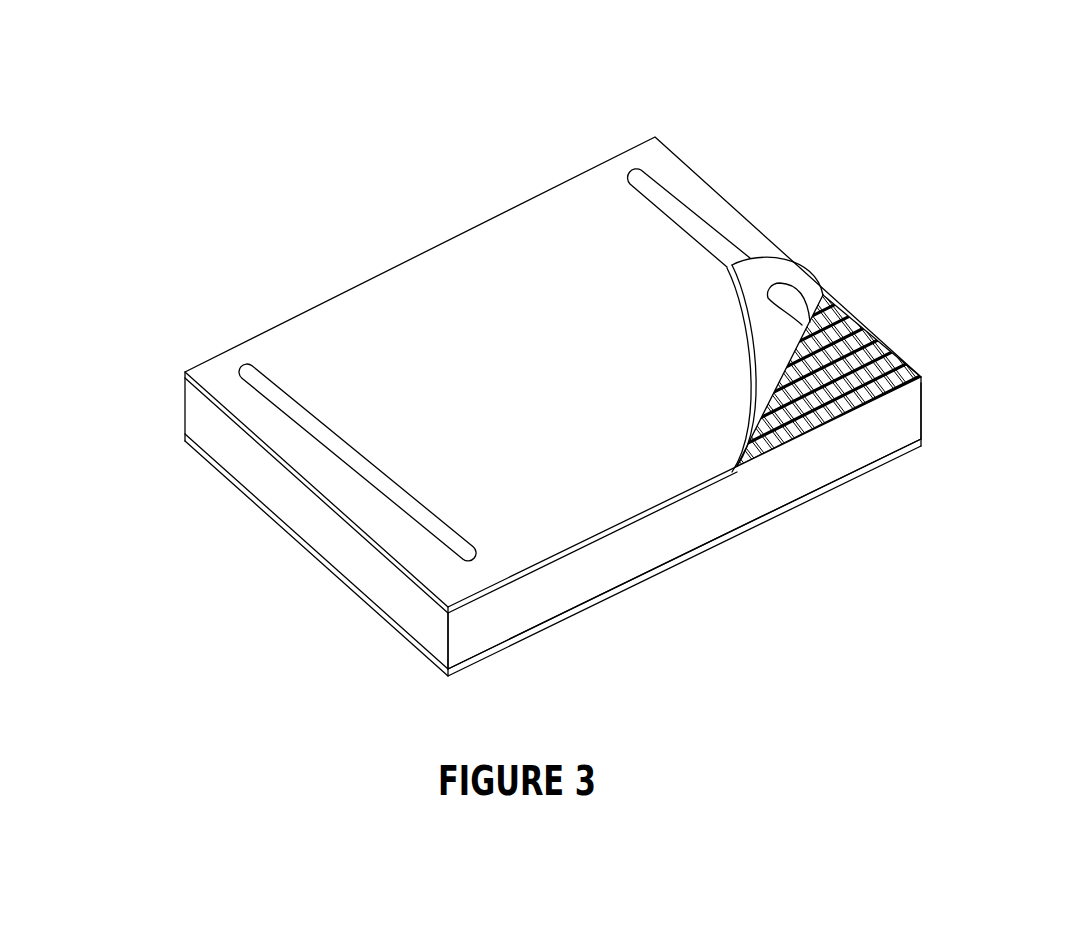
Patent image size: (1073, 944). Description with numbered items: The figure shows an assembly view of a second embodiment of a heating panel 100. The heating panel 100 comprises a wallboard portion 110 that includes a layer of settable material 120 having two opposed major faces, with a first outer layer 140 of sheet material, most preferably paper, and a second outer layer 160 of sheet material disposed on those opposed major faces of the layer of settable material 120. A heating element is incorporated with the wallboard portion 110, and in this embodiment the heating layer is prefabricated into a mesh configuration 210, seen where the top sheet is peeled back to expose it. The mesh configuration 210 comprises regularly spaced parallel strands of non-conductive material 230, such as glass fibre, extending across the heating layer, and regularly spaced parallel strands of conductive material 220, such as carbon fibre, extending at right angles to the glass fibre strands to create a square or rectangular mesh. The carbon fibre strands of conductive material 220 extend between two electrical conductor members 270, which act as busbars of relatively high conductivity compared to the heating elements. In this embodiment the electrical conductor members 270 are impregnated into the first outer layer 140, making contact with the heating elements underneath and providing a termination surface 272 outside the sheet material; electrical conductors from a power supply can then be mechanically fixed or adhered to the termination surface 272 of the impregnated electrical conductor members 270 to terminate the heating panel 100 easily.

The heating panel 100 is at (847, 133).
The wallboard portion 110 is at (932, 410).
The layer of settable material 120 is at (763, 495).
The first outer layer of sheet material 140 is at (637, 510).
The second outer layer of sheet material 160 is at (727, 537).
The mesh configuration 210 is at (838, 420).
The strands of conductive material 220 is at (873, 333).
The strands of non-conductive material 230 is at (915, 372).
The electrical conductor member 270 is at (725, 243).
The termination surface 272 is at (670, 197).